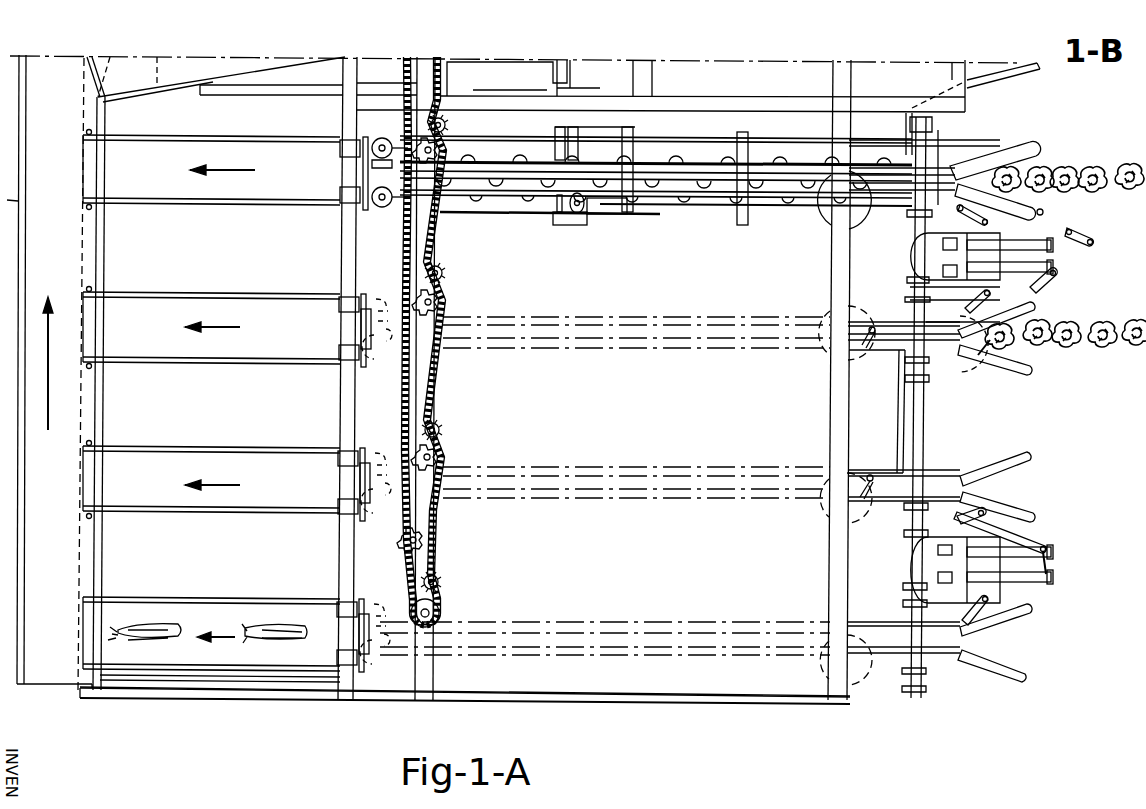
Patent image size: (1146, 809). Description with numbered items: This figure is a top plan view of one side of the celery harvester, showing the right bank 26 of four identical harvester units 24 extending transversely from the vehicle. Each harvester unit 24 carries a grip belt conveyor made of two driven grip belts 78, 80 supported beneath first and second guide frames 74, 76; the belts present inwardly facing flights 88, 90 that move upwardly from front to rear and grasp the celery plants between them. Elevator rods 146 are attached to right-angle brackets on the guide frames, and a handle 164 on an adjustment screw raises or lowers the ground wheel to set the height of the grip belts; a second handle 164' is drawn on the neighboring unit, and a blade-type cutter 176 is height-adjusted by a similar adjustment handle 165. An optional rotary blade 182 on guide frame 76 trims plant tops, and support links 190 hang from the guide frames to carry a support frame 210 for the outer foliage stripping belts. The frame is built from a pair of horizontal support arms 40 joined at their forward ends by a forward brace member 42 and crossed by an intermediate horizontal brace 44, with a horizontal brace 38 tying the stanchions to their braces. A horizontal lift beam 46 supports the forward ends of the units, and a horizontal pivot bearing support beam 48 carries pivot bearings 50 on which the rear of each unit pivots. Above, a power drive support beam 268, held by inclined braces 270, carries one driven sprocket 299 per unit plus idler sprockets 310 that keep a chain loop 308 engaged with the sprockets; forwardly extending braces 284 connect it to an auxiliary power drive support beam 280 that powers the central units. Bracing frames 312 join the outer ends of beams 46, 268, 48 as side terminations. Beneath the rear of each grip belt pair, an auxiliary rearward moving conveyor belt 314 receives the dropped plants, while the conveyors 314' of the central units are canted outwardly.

The harvester unit 24 is at (1069, 162).
The right bank 26 is at (1066, 120).
The horizontal brace 38 is at (228, 690).
The horizontal support arm 40 is at (762, 93).
The forward brace member 42 is at (952, 73).
The intermediate horizontal brace 44 is at (652, 77).
The horizontal lift beam 46 is at (851, 80).
The horizontal pivot bearing support beam 48 is at (340, 248).
The pivot bearing 50 is at (378, 204).
The first guide frame 74 is at (1003, 152).
The second guide frame 76 is at (1036, 218).
The grip belt 78 is at (968, 140).
The grip belt 80 is at (895, 192).
The inwardly facing flight 88 is at (1038, 160).
The inwardly facing flight 90 is at (1040, 203).
The elevator rod 146 is at (905, 315).
The handle 164 is at (941, 489).
The clamp link 164' is at (1008, 270).
The adjustment handle 165 is at (1050, 590).
The blade-type cutter 176 is at (992, 490).
The rotary blade 182 is at (822, 210).
The support link 190 is at (573, 128).
The support frame 210 is at (628, 223).
The power drive support beam 268 is at (433, 672).
The inclined brace 270 is at (358, 113).
The auxiliary power drive support beam 280 is at (570, 72).
The forwardly extending brace 284 is at (510, 80).
The driven sprocket 299 is at (440, 298).
The chain loop 308 is at (438, 549).
The idler sprocket 310 is at (445, 125).
The bracing frame 312 is at (545, 700).
The auxiliary rearward moving conveyor belt 314 is at (211, 406).
The conveyor 314' is at (221, 87).